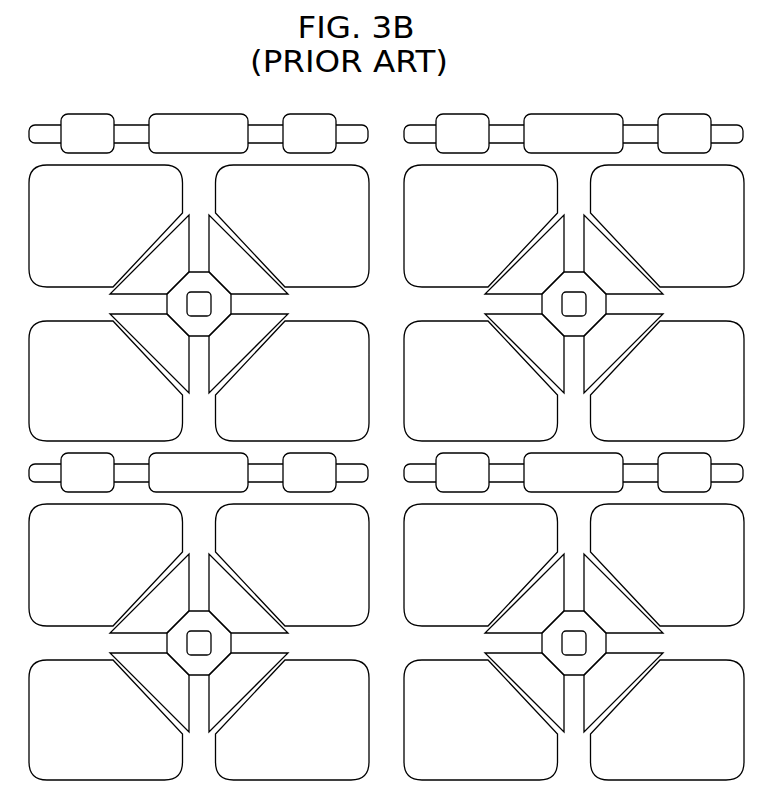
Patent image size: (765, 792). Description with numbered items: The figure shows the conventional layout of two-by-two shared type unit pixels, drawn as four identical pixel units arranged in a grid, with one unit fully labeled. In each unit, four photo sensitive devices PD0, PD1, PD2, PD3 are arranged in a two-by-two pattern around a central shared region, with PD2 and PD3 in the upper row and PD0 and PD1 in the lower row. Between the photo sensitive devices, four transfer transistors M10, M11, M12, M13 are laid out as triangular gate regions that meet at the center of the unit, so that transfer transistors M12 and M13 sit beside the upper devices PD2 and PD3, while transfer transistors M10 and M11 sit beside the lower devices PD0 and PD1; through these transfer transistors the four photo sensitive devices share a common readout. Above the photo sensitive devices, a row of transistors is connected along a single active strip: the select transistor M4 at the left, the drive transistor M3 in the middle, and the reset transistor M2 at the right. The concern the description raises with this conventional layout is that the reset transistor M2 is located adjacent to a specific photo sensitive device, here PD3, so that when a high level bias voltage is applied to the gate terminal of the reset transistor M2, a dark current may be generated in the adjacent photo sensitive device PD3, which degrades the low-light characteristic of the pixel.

The select transistor M4 is at (87, 472).
The drive transistor M3 is at (198, 472).
The reset transistor M2 is at (309, 472).
The photo sensitive device PD0 is at (106, 720).
The photo sensitive device PD1 is at (293, 720).
The photo sensitive device PD2 is at (106, 565).
The photo sensitive device PD3 is at (293, 565).
The transfer transistor M10 is at (149, 692).
The transfer transistor M11 is at (248, 692).
The transfer transistor M12 is at (149, 593).
The transfer transistor M13 is at (248, 593).